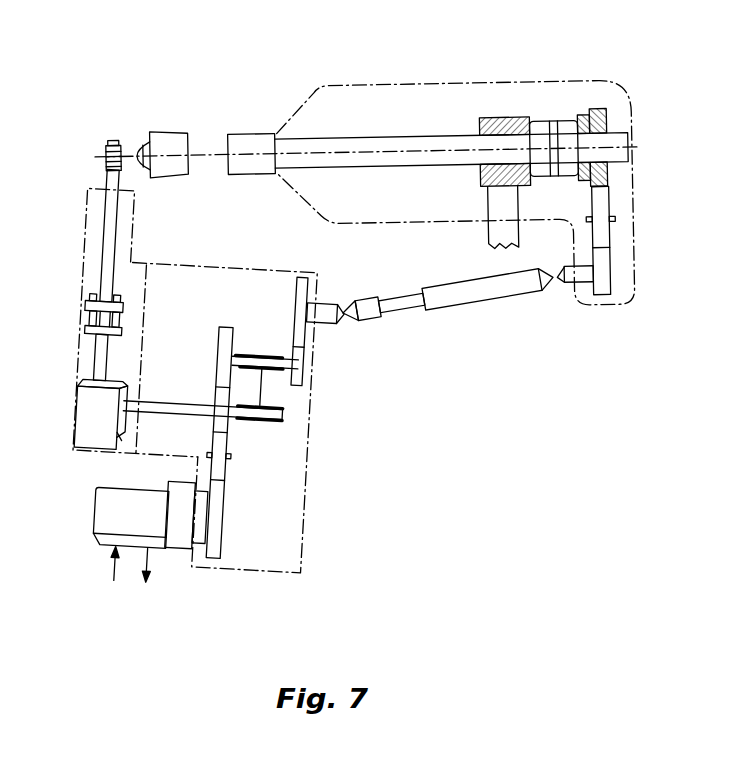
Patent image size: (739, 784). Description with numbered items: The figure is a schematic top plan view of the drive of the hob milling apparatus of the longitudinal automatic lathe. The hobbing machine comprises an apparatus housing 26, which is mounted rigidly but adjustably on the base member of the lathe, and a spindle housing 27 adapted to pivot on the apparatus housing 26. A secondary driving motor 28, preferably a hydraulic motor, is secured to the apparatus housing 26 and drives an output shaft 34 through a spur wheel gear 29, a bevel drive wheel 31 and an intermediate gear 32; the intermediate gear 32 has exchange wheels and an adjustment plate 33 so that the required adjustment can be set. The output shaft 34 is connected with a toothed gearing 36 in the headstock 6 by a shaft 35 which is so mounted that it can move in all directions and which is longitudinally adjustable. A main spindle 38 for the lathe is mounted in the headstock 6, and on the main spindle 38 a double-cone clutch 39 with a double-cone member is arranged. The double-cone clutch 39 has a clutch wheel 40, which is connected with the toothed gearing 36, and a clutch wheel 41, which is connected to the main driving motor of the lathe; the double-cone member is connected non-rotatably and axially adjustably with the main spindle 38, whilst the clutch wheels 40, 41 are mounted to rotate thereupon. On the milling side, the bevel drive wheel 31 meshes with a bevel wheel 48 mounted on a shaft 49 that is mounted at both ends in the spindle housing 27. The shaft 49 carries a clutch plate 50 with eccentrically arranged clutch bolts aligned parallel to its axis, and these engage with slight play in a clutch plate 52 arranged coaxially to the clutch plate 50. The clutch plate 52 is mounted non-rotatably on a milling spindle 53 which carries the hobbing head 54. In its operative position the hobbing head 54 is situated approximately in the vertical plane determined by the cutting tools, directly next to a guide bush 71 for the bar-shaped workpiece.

The headstock 6 is at (408, 102).
The apparatus housing 26 is at (233, 267).
The spindle housing 27 is at (87, 238).
The secondary driving motor 28 is at (110, 520).
The spur wheel gear 29 is at (230, 480).
The bevel drive wheel 31 is at (118, 428).
The intermediate gear 32 is at (322, 345).
The adjustment plate 33 is at (262, 392).
The output shaft 34 is at (330, 308).
The shaft 35 is at (492, 292).
The toothed gearing 36 is at (635, 236).
The main spindle 38 is at (343, 153).
The double-cone clutch 39 is at (557, 98).
The clutch wheel 40 is at (592, 110).
The clutch wheel 41 is at (522, 117).
The bevel wheel 48 is at (82, 380).
The shaft 49 is at (100, 353).
The clutch plate 50 is at (88, 328).
The clutch plate 52 is at (90, 303).
The milling spindle 53 is at (110, 210).
The hobbing head 54 is at (115, 139).
The guide bush 71 is at (167, 141).